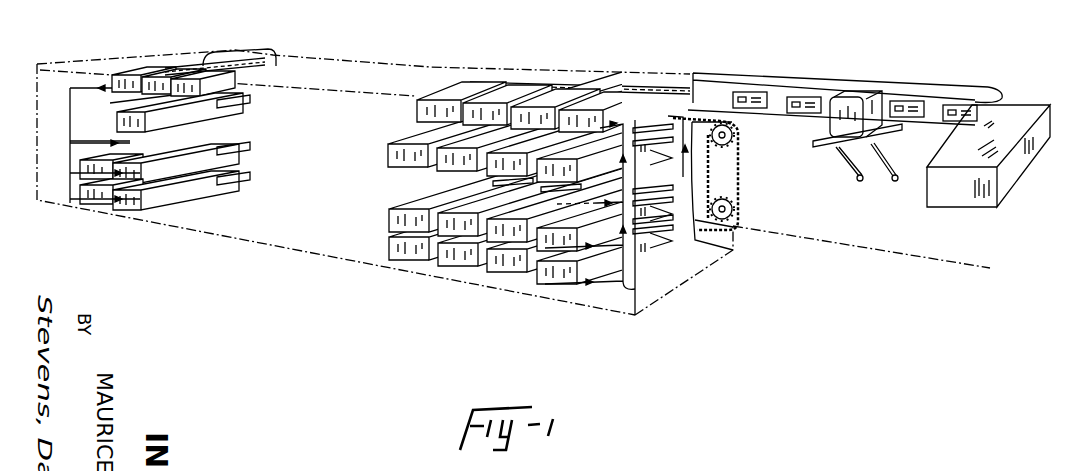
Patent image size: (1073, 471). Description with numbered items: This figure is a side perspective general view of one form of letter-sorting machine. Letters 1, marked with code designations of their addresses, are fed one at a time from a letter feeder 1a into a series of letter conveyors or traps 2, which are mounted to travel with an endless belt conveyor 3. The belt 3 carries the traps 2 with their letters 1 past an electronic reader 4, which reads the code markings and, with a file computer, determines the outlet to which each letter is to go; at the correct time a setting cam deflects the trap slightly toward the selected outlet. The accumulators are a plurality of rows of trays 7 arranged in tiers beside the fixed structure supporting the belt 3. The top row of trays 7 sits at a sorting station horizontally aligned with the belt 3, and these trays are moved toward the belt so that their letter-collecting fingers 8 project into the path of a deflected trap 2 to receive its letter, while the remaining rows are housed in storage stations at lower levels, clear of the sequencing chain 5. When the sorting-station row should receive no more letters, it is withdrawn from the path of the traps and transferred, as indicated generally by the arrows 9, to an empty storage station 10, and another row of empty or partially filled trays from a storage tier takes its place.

The letters 1 is at (812, 94).
The letter feeder 1a is at (967, 197).
The letter conveyors or traps 2 is at (944, 104).
The endless belt conveyor 3 is at (979, 102).
The electronic reader 4 is at (863, 92).
The sequencing chain 5 is at (741, 189).
The trays 7 is at (397, 155).
The letter-collecting fingers 8 is at (248, 158).
The arrows 9 is at (70, 130).
The empty storage station 10 is at (130, 143).